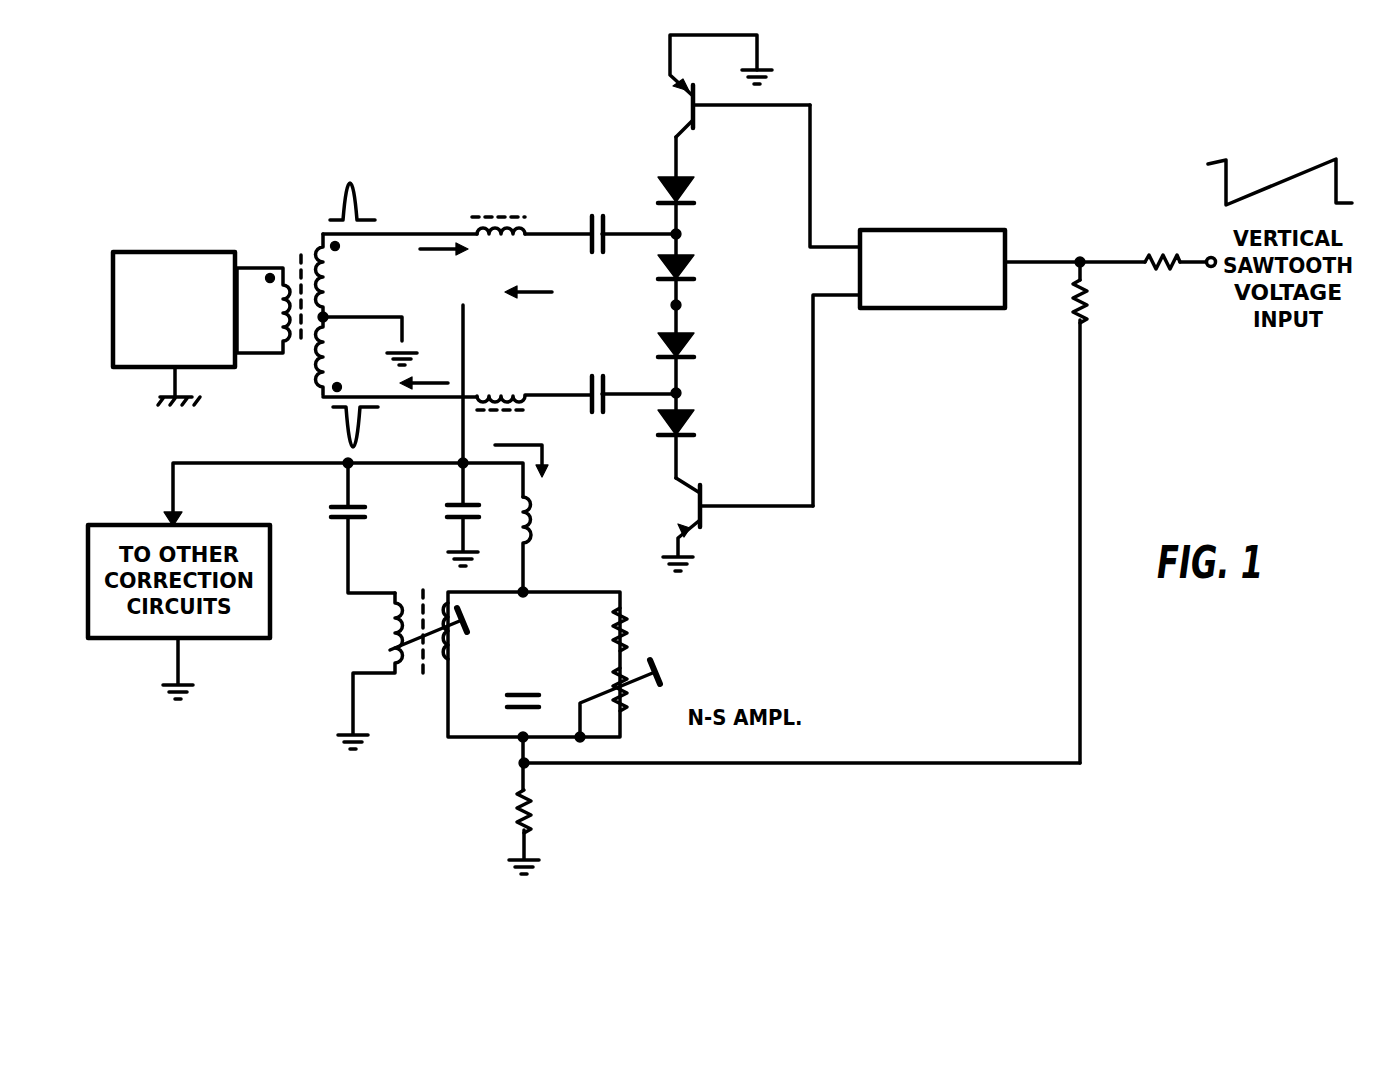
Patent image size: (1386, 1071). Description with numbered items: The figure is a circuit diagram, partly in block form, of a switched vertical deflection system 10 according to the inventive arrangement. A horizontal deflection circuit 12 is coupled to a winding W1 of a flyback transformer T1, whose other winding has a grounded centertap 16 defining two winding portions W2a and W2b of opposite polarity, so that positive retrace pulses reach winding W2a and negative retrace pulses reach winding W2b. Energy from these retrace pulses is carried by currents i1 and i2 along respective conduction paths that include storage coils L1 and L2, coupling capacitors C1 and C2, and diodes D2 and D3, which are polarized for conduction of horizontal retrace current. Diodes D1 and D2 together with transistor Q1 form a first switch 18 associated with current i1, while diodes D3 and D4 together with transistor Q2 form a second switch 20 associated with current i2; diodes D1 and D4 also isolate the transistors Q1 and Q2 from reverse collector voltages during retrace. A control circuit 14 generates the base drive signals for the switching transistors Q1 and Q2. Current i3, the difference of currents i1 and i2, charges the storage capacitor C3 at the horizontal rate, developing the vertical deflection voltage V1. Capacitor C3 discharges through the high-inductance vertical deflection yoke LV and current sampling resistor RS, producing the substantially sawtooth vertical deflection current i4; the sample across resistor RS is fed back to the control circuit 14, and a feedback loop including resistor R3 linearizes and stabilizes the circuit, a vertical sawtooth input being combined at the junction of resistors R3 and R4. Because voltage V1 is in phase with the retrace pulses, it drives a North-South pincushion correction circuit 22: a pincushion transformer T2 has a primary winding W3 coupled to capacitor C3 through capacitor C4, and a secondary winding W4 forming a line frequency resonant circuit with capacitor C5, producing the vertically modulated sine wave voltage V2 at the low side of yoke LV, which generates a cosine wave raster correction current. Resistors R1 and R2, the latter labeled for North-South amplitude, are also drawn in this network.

The switched vertical deflection system 10 is at (905, 609).
The horizontal deflection circuit 12 is at (178, 252).
The control circuit 14 is at (926, 228).
The centertap 16 is at (367, 324).
The first switch 18 is at (701, 159).
The second switch 20 is at (719, 484).
The North-South pincushion correction circuit 22 is at (373, 722).
The flyback transformer T1 is at (327, 315).
The winding W1 is at (263, 310).
The winding portion W2a is at (357, 275).
The winding portion W2b is at (350, 356).
The storage coil L1 is at (498, 211).
The storage coil L2 is at (502, 386).
The coupling capacitor C1 is at (593, 216).
The coupling capacitor C2 is at (596, 376).
The storage capacitor C3 is at (444, 533).
The capacitor C4 is at (345, 528).
The capacitor C5 is at (539, 686).
The diode D1 is at (695, 191).
The diode D2 is at (695, 269).
The diode D3 is at (696, 347).
The diode D4 is at (696, 424).
The switching transistor Q1 is at (723, 86).
The switching transistor Q2 is at (728, 524).
The vertical deflection yoke LV is at (544, 544).
The resistor R1 is at (639, 629).
The resistor R2 is at (622, 698).
The resistor R3 is at (1097, 512).
The resistor R4 is at (1162, 247).
The current sampling resistor RS is at (794, 805).
The pincushion transformer T2 is at (397, 657).
The primary winding W3 is at (374, 657).
The secondary winding W4 is at (468, 637).
The vertical deflection voltage V1 is at (440, 448).
The vertically modulated sine wave voltage V2 is at (540, 584).
The current i1 is at (444, 262).
The current i2 is at (424, 371).
The current i3 is at (528, 281).
The vertical deflection current i4 is at (533, 461).